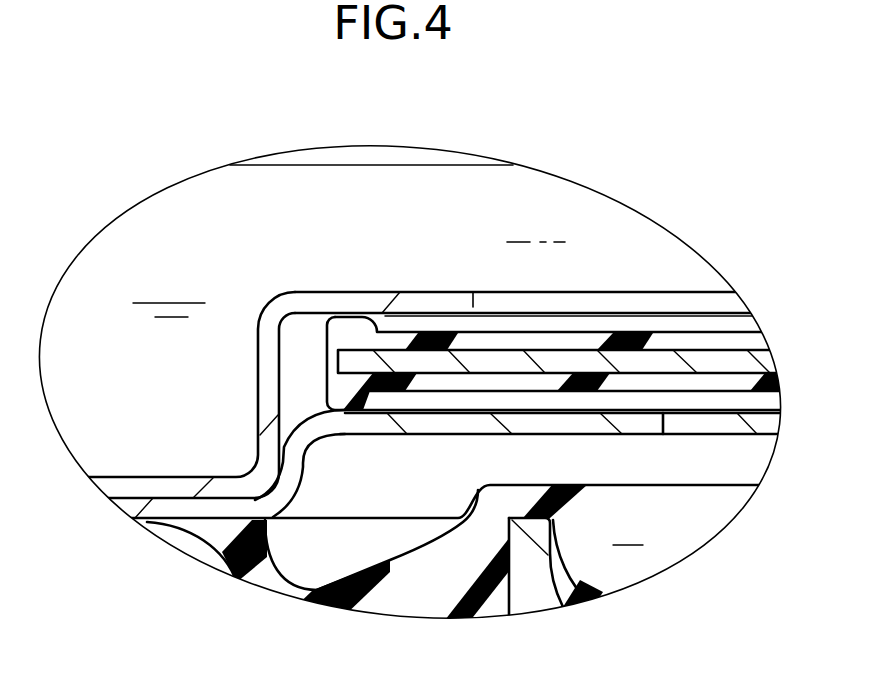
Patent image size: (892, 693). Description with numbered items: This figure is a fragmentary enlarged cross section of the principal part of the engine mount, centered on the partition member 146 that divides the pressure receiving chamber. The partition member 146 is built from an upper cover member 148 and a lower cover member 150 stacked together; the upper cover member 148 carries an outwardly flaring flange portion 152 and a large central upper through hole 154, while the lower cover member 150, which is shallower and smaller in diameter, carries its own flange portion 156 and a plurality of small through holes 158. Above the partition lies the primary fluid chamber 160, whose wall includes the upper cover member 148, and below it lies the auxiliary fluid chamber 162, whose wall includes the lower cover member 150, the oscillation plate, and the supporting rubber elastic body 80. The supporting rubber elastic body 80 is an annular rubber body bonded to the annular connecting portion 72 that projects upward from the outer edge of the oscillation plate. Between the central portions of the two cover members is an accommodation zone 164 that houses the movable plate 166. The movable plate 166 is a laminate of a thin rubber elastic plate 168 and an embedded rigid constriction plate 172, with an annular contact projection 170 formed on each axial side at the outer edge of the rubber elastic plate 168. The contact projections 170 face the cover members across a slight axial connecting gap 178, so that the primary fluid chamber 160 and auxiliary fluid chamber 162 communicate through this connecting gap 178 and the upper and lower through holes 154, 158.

The annular connecting portion 72 is at (530, 558).
The supporting rubber elastic body 80 is at (398, 593).
The partition member 146 is at (363, 110).
The upper cover member 148 is at (412, 298).
The lower cover member 150 is at (470, 422).
The flange portion 152 is at (168, 490).
The upper through hole 154 is at (473, 305).
The flange portion 156 is at (213, 507).
The through holes 158 is at (665, 422).
The primary fluid chamber 160 is at (687, 257).
The auxiliary fluid chamber 162 is at (708, 517).
The accommodation zone 164 is at (297, 351).
The movable plate 166 is at (650, 148).
The rubber elastic plate 168 is at (670, 340).
The contact projection 170 is at (350, 330).
The constriction plate 172 is at (578, 360).
The connecting gap 178 is at (382, 313).